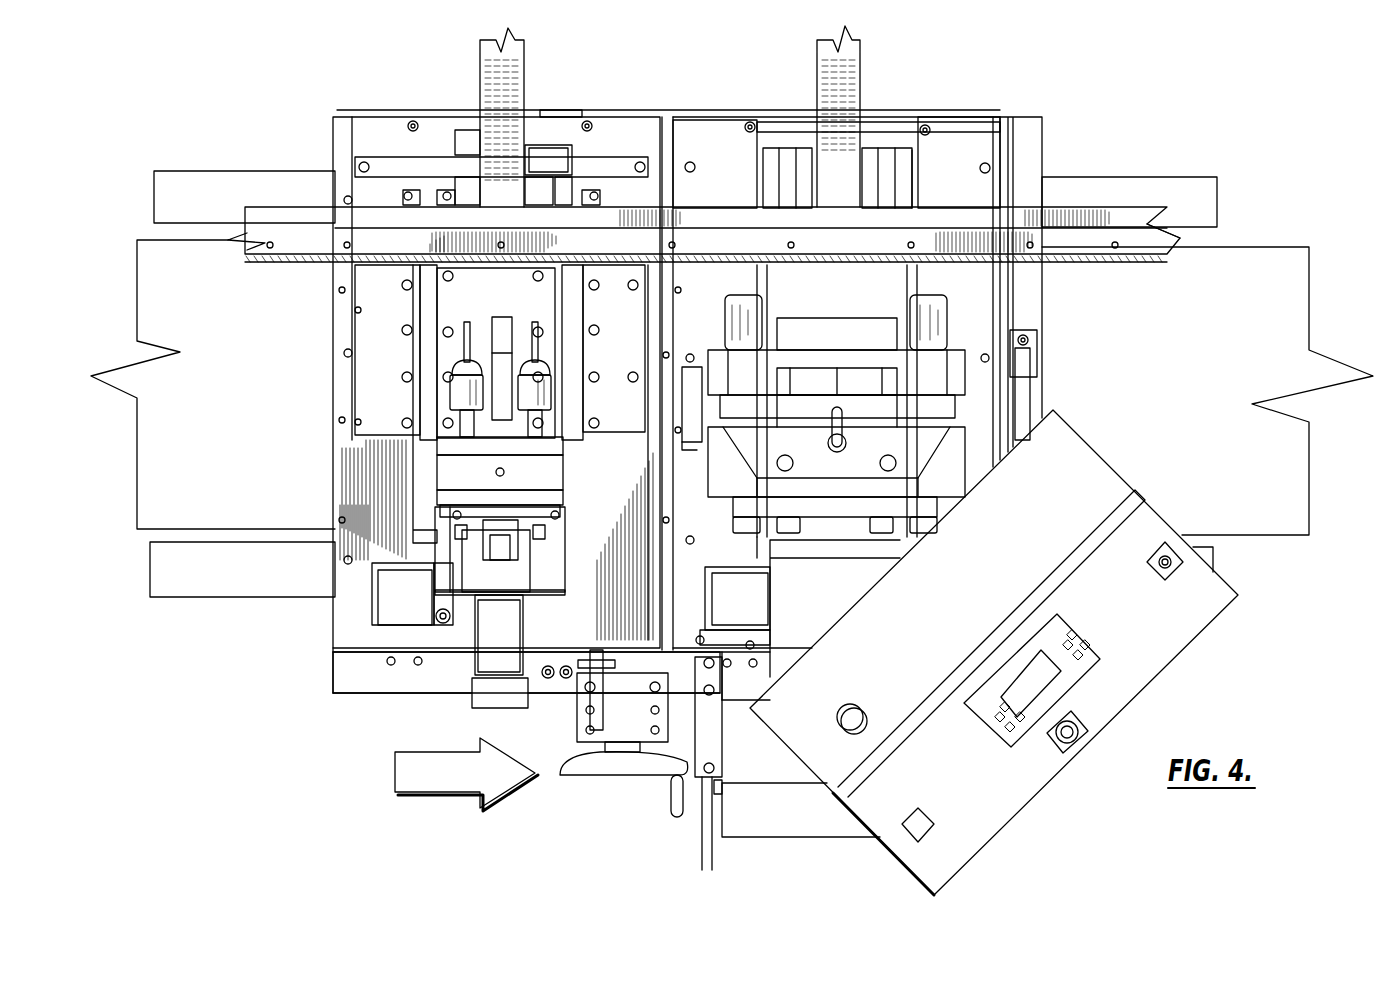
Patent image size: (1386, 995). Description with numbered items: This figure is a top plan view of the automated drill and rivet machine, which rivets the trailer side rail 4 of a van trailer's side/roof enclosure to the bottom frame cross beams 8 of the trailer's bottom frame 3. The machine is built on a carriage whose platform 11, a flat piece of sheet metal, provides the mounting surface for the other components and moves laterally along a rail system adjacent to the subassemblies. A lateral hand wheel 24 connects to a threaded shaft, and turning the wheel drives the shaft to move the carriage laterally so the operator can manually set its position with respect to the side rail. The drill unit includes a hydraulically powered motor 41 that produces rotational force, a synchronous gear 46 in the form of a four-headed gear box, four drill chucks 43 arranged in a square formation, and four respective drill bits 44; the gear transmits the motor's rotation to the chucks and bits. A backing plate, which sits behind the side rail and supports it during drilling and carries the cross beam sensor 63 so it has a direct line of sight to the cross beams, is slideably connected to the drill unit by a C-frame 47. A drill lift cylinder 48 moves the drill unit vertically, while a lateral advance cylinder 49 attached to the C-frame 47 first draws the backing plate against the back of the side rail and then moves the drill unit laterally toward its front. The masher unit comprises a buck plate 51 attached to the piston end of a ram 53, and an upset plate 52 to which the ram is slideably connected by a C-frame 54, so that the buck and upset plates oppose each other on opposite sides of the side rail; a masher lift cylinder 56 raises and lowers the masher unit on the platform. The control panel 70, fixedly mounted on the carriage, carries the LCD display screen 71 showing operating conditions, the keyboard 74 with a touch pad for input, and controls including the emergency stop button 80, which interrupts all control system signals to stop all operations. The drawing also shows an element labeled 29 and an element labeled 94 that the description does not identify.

The bottom frame 3 is at (1022, 216).
The trailer side rail 4 is at (1138, 238).
The bottom frame cross beam 8 is at (525, 77).
The platform 11 is at (348, 680).
The lateral hand wheel 24 is at (623, 780).
The support member 29 is at (1148, 403).
The motor 41 is at (485, 656).
The drill chuck 43 is at (458, 392).
The drill bit 44 is at (466, 350).
The synchronous gear 46 is at (455, 470).
The C-frame 47 is at (428, 300).
The drill lift cylinder 48 is at (390, 598).
The lateral advance cylinder 49 is at (478, 700).
The buck plate 51 is at (873, 328).
The upset plate 52 is at (890, 140).
The ram 53 is at (745, 607).
The C-frame 54 is at (915, 182).
The masher lift cylinder 56 is at (857, 578).
The cross beam sensor 63 is at (550, 160).
The control panel 70 is at (1173, 600).
The display screen 71 is at (1050, 683).
The keyboard 74 is at (1088, 653).
The emergency stop button 80 is at (1076, 744).
The bracket 94 is at (810, 802).